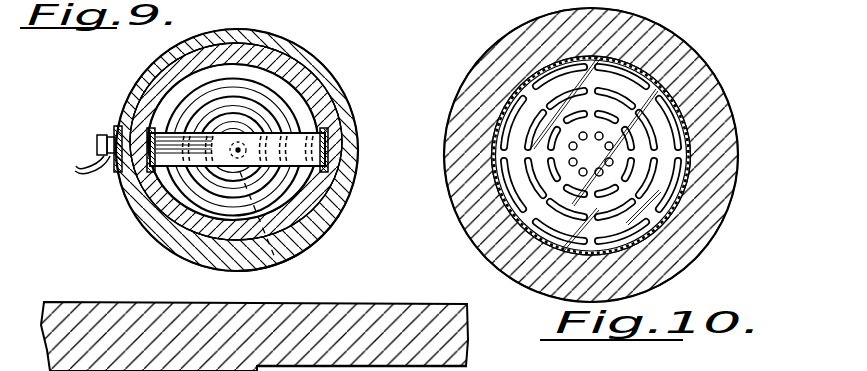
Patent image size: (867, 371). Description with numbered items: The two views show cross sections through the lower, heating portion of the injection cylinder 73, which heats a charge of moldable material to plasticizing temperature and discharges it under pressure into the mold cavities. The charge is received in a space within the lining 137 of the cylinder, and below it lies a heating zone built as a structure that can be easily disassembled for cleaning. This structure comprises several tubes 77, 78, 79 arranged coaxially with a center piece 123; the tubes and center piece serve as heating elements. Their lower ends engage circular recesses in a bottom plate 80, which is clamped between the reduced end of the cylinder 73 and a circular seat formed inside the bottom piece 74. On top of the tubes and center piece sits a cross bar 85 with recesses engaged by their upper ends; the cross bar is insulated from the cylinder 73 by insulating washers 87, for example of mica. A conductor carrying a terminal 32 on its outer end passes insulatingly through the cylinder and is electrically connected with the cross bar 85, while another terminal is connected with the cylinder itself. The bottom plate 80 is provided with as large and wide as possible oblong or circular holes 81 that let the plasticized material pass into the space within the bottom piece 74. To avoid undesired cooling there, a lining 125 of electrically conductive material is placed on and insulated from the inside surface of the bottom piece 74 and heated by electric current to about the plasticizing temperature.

In FIG. 9, the terminal 32 is at (96, 144).
In FIG. 9, the injection cylinder 73 is at (350, 140).
In FIG. 9, the tube 77 is at (230, 79).
In FIG. 9, the tube 78 is at (246, 105).
In FIG. 9, the tube 79 is at (300, 125).
In FIG. 9, the cross bar 85 is at (330, 193).
In FIG. 9, the insulating washers 87 is at (330, 153).
In FIG. 9, the center piece 123 is at (290, 263).
In FIG. 9, the lining 137 is at (337, 222).
In FIG. 10, the bottom piece 74 is at (723, 146).
In FIG. 10, the bottom plate 80 is at (657, 180).
In FIG. 10, the holes 81 is at (650, 127).
In FIG. 10, the lining 125 is at (668, 212).